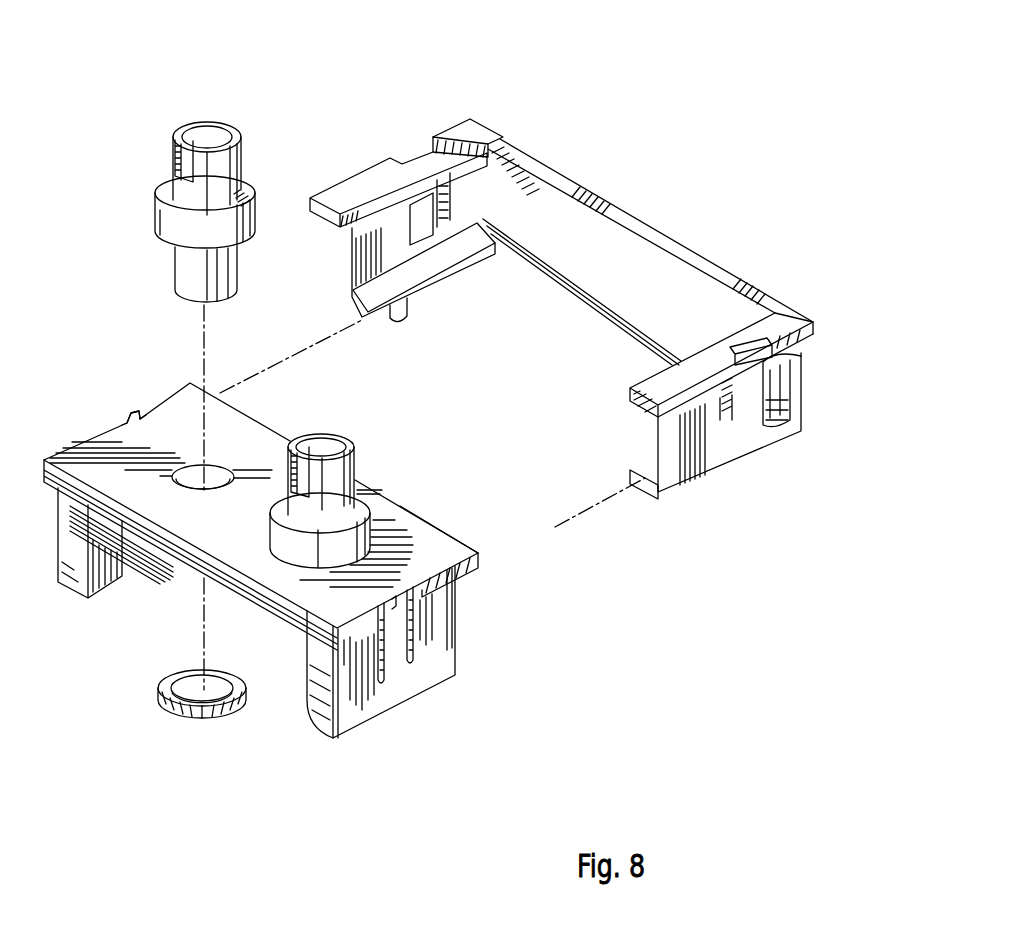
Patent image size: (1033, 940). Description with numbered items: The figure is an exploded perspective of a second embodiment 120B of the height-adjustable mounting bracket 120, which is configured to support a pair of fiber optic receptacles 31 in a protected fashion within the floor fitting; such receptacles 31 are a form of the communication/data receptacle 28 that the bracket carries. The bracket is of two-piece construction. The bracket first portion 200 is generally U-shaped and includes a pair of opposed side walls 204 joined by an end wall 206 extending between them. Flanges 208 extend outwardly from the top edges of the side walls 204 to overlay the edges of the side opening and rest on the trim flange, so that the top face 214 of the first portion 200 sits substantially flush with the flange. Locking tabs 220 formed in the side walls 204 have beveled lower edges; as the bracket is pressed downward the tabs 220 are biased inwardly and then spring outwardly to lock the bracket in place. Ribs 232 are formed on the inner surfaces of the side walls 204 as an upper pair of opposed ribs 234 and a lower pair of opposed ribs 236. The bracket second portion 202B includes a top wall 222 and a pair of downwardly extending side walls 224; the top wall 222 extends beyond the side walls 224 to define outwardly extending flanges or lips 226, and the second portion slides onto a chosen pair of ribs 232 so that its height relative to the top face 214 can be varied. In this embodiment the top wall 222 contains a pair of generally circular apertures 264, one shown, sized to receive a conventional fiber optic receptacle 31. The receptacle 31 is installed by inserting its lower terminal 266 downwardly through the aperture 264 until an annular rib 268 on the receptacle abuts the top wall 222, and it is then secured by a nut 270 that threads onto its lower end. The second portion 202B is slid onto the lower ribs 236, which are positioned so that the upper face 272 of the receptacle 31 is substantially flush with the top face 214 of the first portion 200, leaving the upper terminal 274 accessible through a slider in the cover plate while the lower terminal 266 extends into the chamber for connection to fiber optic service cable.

The communication/data receptacle 28 is at (259, 315).
The fiber optic receptacle 31 is at (240, 163).
The height-adjustable mounting bracket 120 is at (455, 400).
The mounting bracket embodiment 120B is at (597, 613).
The bracket first portion 200 is at (637, 213).
The bracket second portion 202B is at (255, 440).
The side wall 204 is at (350, 283).
The end wall 206 is at (613, 303).
The flange 208 is at (433, 137).
The top face 214 is at (472, 135).
The locking tab 220 is at (797, 386).
The top wall 222 is at (410, 530).
The side wall 224 is at (447, 653).
The flange 226 is at (460, 577).
The rib 232 is at (577, 339).
The upper rib 234 is at (478, 143).
The lower rib 236 is at (428, 283).
The aperture 264 is at (127, 430).
The lower terminal 266 is at (180, 282).
The annular rib 268 is at (155, 218).
The nut 270 is at (157, 708).
The upper face 272 is at (183, 122).
The upper terminal 274 is at (222, 128).